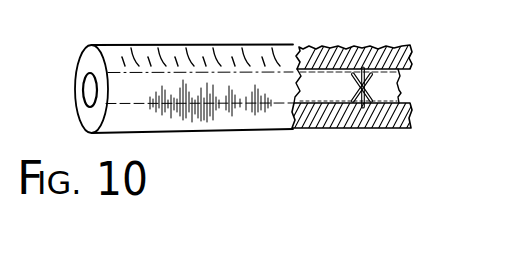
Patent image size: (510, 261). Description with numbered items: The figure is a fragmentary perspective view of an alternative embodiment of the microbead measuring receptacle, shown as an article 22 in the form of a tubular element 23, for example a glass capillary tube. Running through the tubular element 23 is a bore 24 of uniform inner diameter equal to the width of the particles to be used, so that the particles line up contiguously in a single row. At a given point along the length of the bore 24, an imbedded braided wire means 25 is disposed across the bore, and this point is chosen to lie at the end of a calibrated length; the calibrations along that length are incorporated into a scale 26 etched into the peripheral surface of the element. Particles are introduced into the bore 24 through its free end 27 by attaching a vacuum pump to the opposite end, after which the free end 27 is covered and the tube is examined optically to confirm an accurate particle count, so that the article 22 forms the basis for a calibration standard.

The article 22 is at (271, 147).
The tubular element 23 is at (217, 132).
The bore 24 is at (401, 92).
The imbedded braided wire means 25 is at (358, 85).
The scale 26 is at (256, 48).
The free end 27 is at (88, 91).